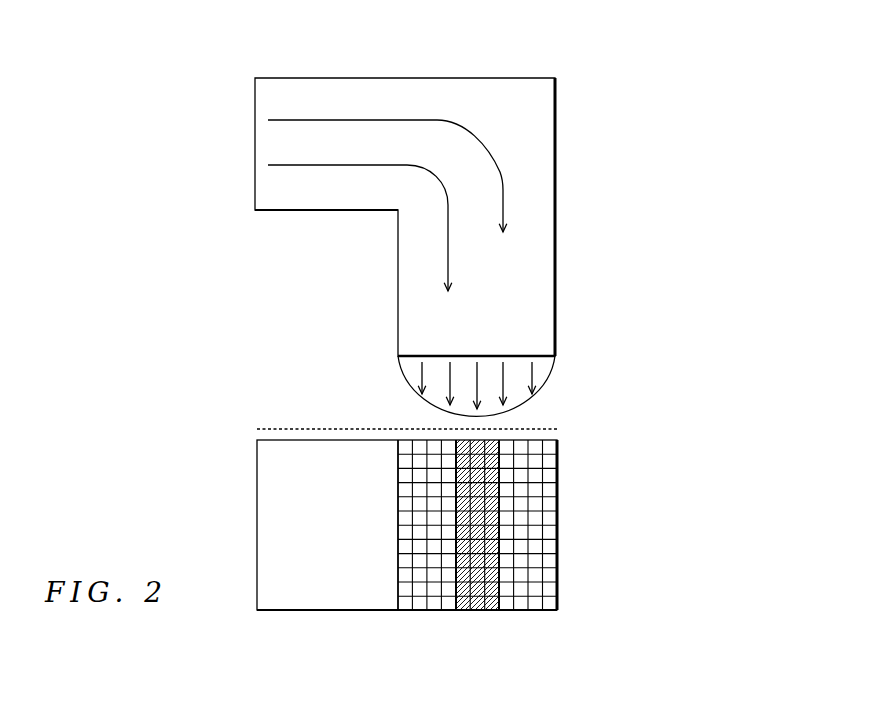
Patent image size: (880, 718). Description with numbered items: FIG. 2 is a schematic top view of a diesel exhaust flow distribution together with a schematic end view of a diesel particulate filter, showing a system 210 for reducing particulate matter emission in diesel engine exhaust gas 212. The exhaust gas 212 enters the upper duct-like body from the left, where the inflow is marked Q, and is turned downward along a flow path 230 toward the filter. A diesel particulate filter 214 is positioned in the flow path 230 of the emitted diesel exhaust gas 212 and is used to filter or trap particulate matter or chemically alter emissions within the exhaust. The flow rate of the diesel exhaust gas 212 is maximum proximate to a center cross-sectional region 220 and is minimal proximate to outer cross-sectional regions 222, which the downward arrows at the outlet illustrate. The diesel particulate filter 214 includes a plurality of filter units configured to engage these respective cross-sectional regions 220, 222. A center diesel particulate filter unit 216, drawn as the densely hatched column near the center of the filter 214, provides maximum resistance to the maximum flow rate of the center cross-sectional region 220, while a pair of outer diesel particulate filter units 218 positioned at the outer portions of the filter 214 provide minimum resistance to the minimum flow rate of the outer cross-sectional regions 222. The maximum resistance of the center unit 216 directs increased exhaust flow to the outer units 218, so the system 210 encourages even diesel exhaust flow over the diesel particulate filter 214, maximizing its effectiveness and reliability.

The system 210 is at (477, 58).
The diesel engine exhaust gas 212 is at (498, 177).
The diesel particulate filter 214 is at (567, 555).
The center diesel particulate filter unit 216 is at (488, 592).
The outer diesel particulate filter units 218 is at (537, 503).
The center cross-sectional region 220 is at (463, 386).
The outer cross-sectional regions 222 is at (518, 381).
The flow path 230 is at (448, 261).
The flow rate Q is at (244, 143).